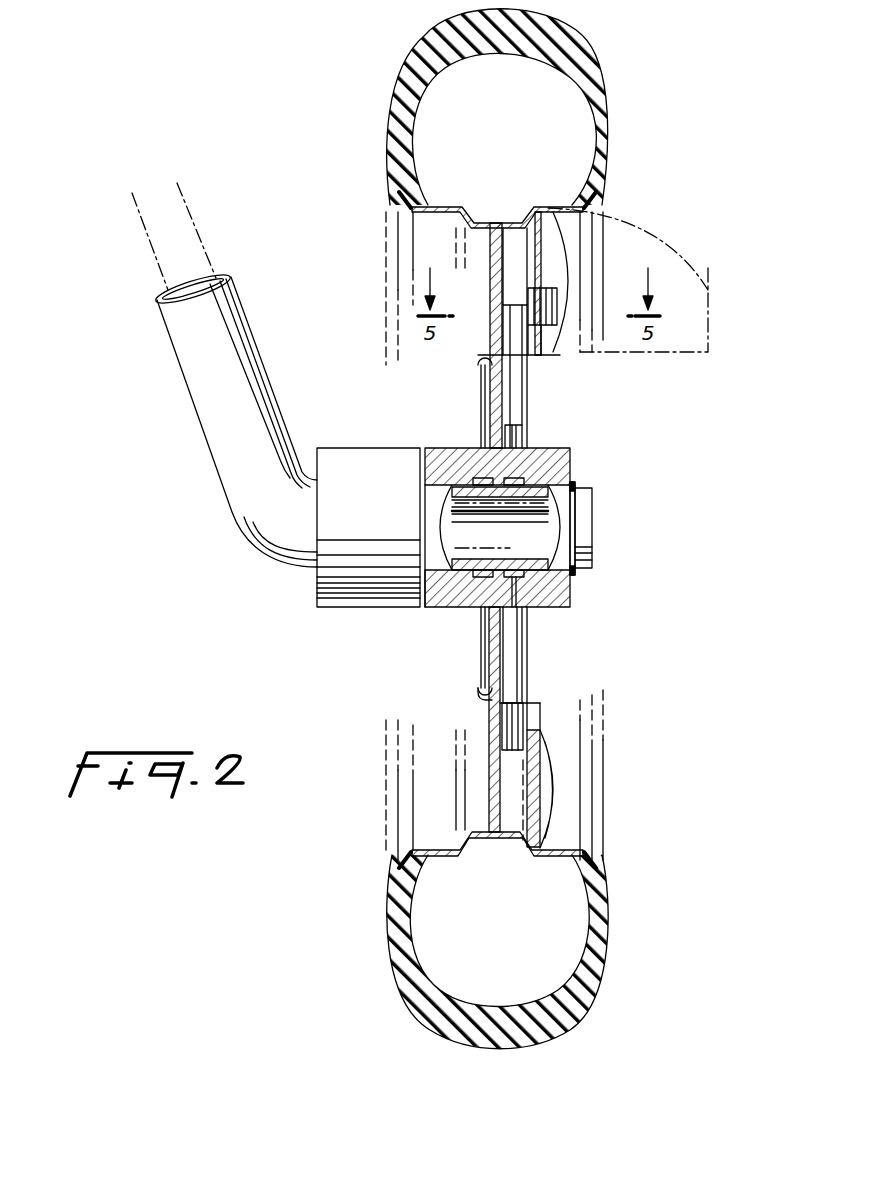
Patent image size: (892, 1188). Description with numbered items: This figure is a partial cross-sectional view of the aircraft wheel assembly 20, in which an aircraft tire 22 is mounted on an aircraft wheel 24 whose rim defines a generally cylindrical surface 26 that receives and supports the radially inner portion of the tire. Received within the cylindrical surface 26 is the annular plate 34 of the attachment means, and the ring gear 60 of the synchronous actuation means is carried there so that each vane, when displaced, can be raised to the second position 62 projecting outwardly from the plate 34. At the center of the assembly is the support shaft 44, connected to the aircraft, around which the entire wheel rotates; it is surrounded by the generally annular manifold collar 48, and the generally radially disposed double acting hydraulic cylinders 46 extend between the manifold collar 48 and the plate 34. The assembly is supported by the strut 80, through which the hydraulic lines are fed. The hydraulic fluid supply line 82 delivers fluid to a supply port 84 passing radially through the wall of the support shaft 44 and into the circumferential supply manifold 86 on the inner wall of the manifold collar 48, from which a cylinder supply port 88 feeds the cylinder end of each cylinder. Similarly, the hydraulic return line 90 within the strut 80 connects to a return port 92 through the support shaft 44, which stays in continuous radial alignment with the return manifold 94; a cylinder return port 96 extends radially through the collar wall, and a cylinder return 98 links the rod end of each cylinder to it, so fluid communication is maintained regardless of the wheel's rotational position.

The aircraft wheel assembly 20 is at (633, 117).
The aircraft tire 22 is at (585, 42).
The aircraft wheel 24 is at (406, 196).
The cylindrical surface 26 is at (460, 228).
The plate 34 is at (542, 268).
The support shaft 44 is at (587, 550).
The double acting hydraulic cylinders 46 is at (522, 395).
The manifold collar 48 is at (557, 592).
The ring gear 60 is at (528, 292).
The second position 62 is at (650, 232).
The strut 80 is at (198, 373).
The hydraulic fluid supply line 82 is at (185, 210).
The supply port 84 is at (573, 483).
The supply manifold 86 is at (565, 465).
The cylinder supply port 88 is at (553, 447).
The hydraulic return line 90 is at (150, 235).
The return port 92 is at (490, 556).
The return manifold 94 is at (395, 601).
The cylinder return port 96 is at (470, 603).
The cylinder return 98 is at (480, 665).